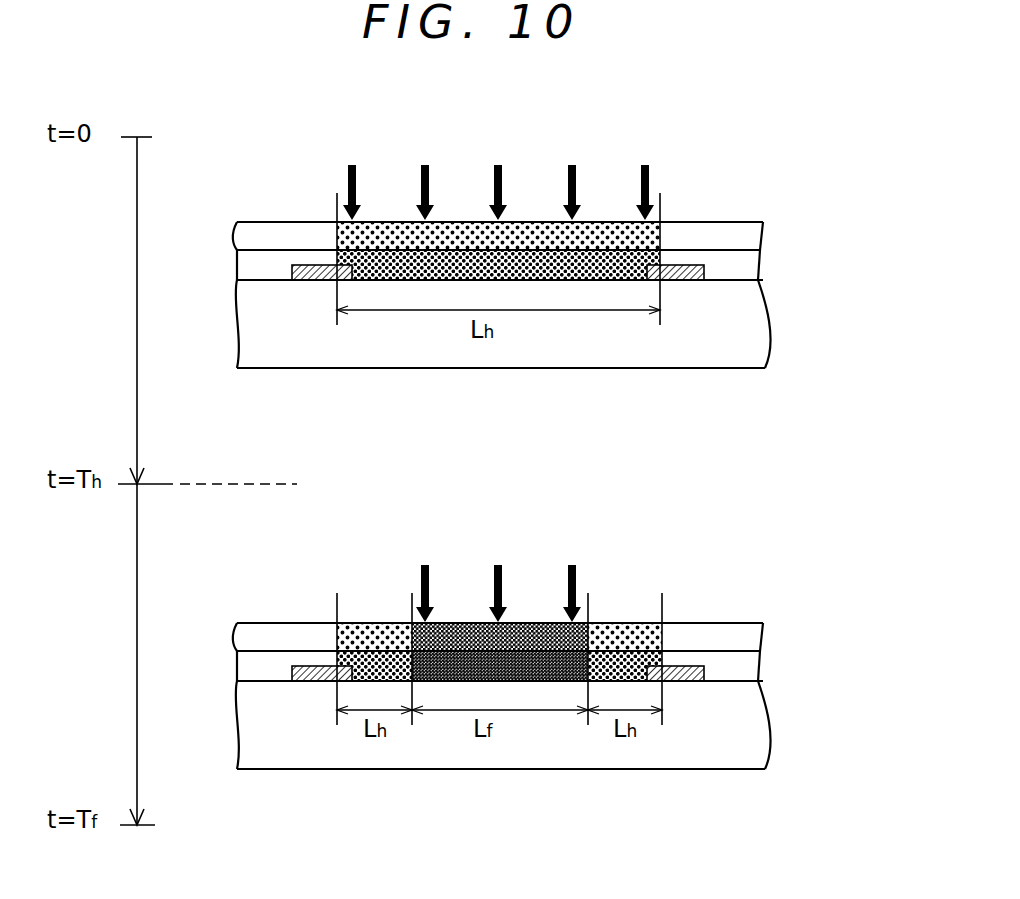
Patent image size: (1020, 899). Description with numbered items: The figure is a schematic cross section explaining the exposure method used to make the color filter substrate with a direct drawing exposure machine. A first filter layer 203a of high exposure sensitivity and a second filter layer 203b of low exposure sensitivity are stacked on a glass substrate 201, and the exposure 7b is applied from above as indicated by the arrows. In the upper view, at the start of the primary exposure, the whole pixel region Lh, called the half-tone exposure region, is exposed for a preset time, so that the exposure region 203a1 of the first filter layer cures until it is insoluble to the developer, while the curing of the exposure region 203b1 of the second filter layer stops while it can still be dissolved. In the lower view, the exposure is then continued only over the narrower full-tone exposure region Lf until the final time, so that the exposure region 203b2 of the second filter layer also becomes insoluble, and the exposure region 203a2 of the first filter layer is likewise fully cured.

The laser beam 7b is at (507, 186).
The glass substrate 201 is at (745, 323).
The first filter layer 203a is at (740, 269).
The second filter layer 203b is at (727, 237).
The exposure region of the first filter layer 203a1 is at (600, 266).
The exposure region of the second filter layer 203b1 is at (390, 232).
The exposure region of the first filter layer 203a2 is at (530, 668).
The exposure region of the second filter layer 203b2 is at (465, 628).